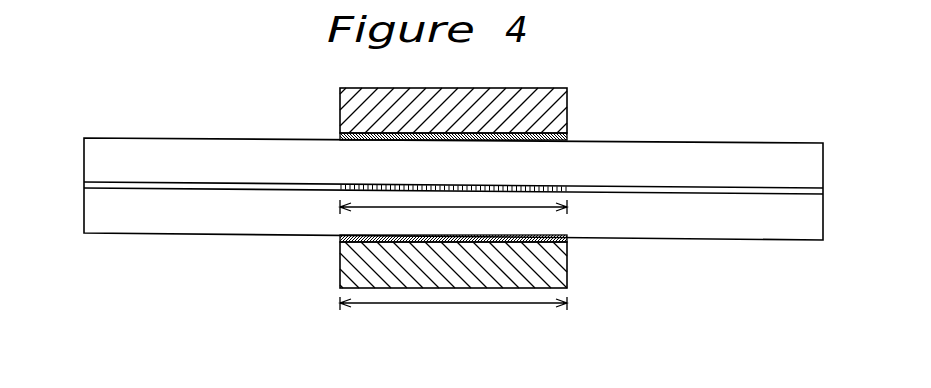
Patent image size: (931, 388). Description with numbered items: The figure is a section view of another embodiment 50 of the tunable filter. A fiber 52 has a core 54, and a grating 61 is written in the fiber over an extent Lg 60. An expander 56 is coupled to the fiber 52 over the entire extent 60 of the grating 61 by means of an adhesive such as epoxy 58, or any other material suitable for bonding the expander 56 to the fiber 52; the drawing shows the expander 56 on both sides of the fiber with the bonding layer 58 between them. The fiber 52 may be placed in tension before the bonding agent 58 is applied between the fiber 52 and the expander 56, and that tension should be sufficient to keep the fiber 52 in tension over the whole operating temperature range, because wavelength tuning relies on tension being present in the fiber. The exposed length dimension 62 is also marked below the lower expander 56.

The embodiment of tunable filter 50 is at (172, 114).
The fiber 52 is at (192, 235).
The core 54 is at (127, 177).
The expander 56 is at (542, 82).
The epoxy 58 is at (338, 139).
The extent Lg 60 is at (453, 216).
The grating 61 is at (517, 177).
The exposed length L(exp) 62 is at (453, 329).